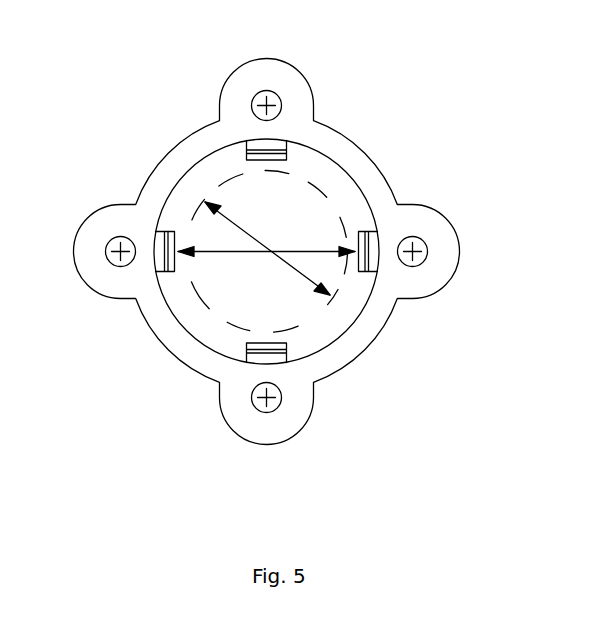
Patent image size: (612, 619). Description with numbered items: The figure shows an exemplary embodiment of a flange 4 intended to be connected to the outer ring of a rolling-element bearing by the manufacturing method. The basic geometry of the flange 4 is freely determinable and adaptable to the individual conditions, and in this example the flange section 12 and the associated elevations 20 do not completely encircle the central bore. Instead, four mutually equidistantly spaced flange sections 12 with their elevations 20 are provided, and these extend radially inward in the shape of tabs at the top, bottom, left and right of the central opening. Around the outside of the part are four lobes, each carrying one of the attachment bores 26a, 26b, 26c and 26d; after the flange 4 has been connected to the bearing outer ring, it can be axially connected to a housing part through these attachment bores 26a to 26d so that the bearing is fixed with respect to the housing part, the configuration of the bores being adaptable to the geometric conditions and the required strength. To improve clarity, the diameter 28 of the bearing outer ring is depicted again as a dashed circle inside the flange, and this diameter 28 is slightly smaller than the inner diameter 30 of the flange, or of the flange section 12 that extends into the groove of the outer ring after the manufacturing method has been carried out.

The flange 4 is at (382, 187).
The flange section 12 is at (323, 156).
The elevation 20 is at (288, 141).
The attachment bore 26a is at (423, 262).
The attachment bore 26b is at (280, 112).
The attachment bore 26c is at (107, 260).
The attachment bore 26d is at (277, 408).
The diameter of the bearing outer ring 28 is at (325, 300).
The inner diameter of the flange 30 is at (209, 306).